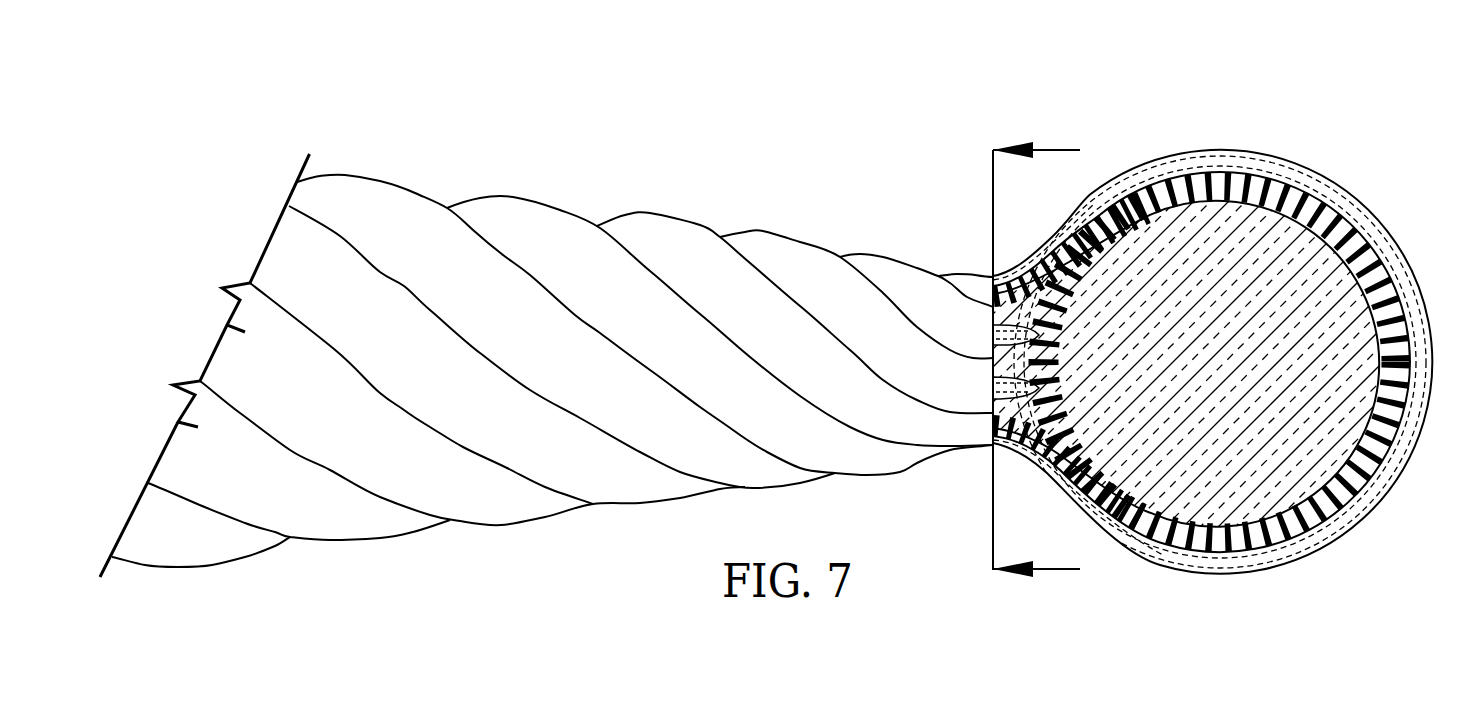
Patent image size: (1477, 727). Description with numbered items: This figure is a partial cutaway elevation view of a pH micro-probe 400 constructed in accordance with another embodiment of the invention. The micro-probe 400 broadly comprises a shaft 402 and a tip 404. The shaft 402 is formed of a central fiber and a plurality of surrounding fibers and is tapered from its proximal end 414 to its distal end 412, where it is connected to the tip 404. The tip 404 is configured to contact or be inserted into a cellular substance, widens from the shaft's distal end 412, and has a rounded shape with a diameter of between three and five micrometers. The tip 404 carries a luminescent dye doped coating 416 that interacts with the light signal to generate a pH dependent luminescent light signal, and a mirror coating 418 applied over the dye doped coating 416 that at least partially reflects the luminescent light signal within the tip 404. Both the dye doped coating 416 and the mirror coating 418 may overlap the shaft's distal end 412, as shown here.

The pH micro-probe 400 is at (685, 102).
The shaft 402 is at (587, 167).
The tip 404 is at (1107, 150).
The distal end 412 is at (908, 240).
The proximal end 414 is at (353, 148).
The luminescent dye doped coating 416 is at (1365, 250).
The mirror coating 418 is at (1362, 205).